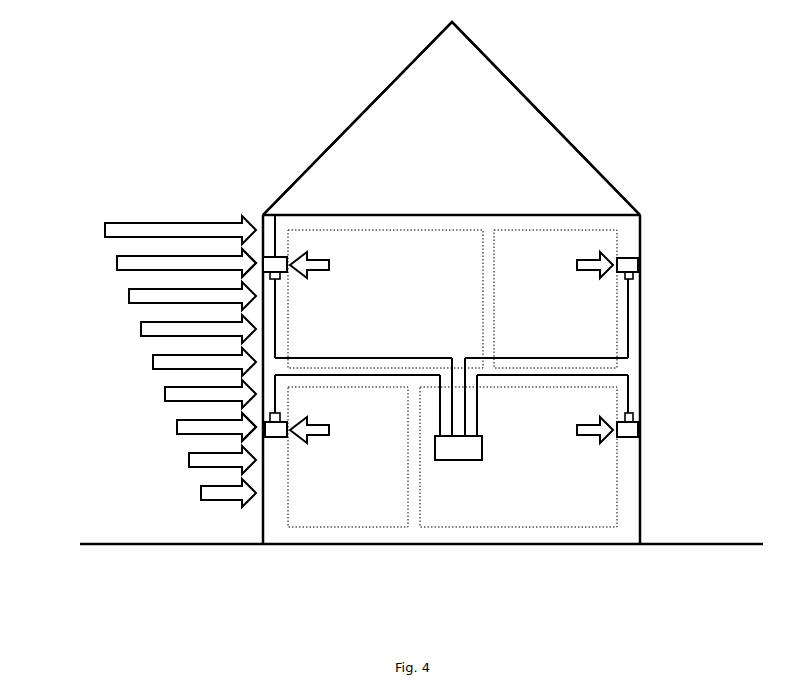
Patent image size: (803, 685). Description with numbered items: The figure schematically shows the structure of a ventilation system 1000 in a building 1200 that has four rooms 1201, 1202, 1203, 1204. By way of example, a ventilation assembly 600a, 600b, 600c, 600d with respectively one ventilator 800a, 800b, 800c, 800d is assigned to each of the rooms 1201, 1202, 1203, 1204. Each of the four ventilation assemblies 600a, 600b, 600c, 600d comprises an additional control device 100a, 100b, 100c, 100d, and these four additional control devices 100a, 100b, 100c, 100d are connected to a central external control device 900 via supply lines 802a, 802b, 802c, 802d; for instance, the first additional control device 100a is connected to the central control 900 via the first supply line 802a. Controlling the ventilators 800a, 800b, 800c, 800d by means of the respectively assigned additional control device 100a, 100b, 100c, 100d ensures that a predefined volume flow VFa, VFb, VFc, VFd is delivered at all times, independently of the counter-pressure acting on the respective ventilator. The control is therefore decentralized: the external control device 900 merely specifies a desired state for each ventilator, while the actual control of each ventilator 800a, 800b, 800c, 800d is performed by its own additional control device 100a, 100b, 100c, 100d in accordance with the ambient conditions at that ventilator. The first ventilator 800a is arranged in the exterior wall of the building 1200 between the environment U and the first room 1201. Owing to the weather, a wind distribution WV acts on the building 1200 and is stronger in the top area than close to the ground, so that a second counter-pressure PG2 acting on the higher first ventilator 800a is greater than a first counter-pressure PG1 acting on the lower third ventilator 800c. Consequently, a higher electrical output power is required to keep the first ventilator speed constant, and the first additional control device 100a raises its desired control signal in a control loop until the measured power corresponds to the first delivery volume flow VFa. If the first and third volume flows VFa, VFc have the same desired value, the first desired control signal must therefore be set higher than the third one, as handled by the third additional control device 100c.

The ventilation system 1000 is at (637, 31).
The building 1200 is at (568, 186).
The first room 1201 is at (398, 230).
The second room 1202 is at (536, 228).
The third room 1203 is at (333, 527).
The fourth room 1204 is at (533, 527).
The first supply line 802a is at (412, 357).
The second supply line 802b is at (515, 357).
The third supply line 802c is at (407, 377).
The fourth supply line 802d is at (540, 377).
The external control device 900 is at (465, 455).
The first additional control device 100a is at (277, 282).
The second additional control device 100b is at (637, 277).
The third additional control device 100c is at (280, 413).
The fourth additional control device 100d is at (637, 417).
The first ventilator 800a is at (277, 256).
The second ventilator 800b is at (622, 258).
The third ventilator 800c is at (280, 447).
The fourth ventilator 800d is at (638, 428).
The first ventilation assembly 600a is at (272, 238).
The second ventilation assembly 600b is at (658, 262).
The third ventilation assembly 600c is at (275, 452).
The fourth ventilation assembly 600d is at (626, 452).
The first delivery volume flow VFa is at (328, 267).
The second delivery volume flow VFb is at (582, 270).
The third delivery volume flow VFc is at (330, 430).
The fourth delivery volume flow VFd is at (585, 437).
The wind distribution WV is at (170, 209).
The first counter-pressure PG1 is at (180, 428).
The second counter-pressure PG2 is at (125, 263).
The environment U is at (108, 88).